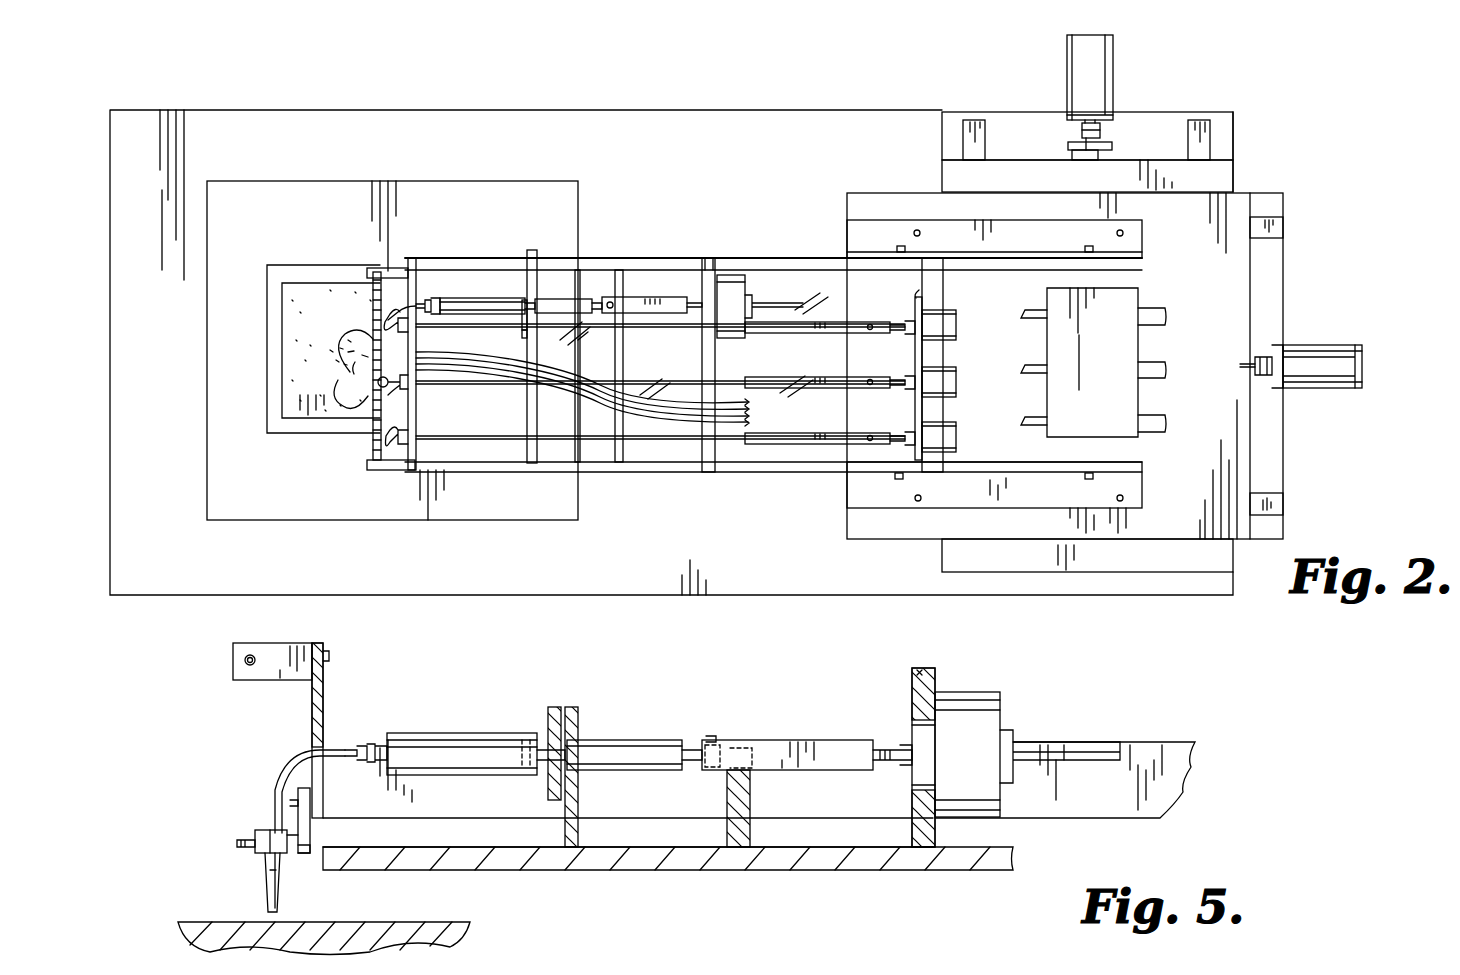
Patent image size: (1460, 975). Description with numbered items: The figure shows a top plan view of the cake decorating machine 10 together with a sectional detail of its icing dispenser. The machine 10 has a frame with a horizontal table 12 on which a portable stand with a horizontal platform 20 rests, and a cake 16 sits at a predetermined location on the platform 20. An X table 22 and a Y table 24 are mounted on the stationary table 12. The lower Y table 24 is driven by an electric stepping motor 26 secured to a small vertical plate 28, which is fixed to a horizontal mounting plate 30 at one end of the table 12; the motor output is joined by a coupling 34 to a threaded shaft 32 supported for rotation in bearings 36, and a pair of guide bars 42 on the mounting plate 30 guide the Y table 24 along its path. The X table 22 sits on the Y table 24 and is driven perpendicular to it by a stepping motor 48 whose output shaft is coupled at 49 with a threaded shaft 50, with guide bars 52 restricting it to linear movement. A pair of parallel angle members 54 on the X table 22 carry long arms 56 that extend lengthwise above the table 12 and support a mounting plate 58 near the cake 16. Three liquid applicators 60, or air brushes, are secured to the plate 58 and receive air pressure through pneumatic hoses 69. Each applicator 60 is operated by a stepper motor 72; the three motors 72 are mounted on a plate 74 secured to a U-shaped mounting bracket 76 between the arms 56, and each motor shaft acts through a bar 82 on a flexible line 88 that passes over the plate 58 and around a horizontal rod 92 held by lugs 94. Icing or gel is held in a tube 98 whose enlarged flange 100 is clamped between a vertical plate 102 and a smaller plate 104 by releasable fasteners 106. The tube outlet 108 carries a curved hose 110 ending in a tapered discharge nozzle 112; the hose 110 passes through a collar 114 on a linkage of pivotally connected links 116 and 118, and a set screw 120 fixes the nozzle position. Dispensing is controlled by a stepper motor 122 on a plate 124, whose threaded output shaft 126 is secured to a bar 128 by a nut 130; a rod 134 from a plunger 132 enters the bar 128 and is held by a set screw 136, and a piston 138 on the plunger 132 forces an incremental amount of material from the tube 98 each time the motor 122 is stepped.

In FIG. 2, the cake decorating machine 10 is at (1330, 104).
In FIG. 2, the horizontal table 12 is at (822, 595).
In FIG. 2, the cake 16 is at (300, 408).
In FIG. 5, the cake 16 is at (453, 922).
In FIG. 2, the horizontal platform 20 is at (332, 508).
In FIG. 2, the X table 22 is at (1252, 292).
In FIG. 2, the Y table 24 is at (1236, 180).
In FIG. 2, the electric stepping motor 26 is at (1113, 50).
In FIG. 2, the vertical plate 28 is at (1112, 115).
In FIG. 2, the horizontal mounting plate 30 is at (1034, 128).
In FIG. 2, the threaded shaft 32 is at (1104, 147).
In FIG. 2, the coupling 34 is at (1100, 130).
In FIG. 2, the bearings 36 is at (1075, 160).
In FIG. 2, the guide bars 42 is at (1248, 133).
In FIG. 2, the electric stepping motor 48 is at (1325, 390).
In FIG. 2, the coupling 49 is at (1265, 357).
In FIG. 2, the threaded shaft 50 is at (1250, 365).
In FIG. 2, the guide bars 52 is at (1283, 228).
In FIG. 2, the angle members 54 is at (858, 232).
In FIG. 2, the arms 56 is at (708, 262).
In FIG. 5, the arms 56 is at (1072, 810).
In FIG. 2, the mounting plate 58 is at (416, 262).
In FIG. 5, the mounting plate 58 is at (325, 705).
In FIG. 2, the liquid applicators 60 is at (409, 333).
In FIG. 2, the pneumatic hoses 69 is at (665, 395).
In FIG. 2, the electric stepper motor 72 is at (956, 362).
In FIG. 2, the plate 74 is at (918, 297).
In FIG. 2, the U-shaped mounting bracket 76 is at (943, 282).
In FIG. 2, the bar 82 is at (855, 333).
In FIG. 2, the flexible lines 88 is at (655, 327).
In FIG. 2, the horizontal rod 92 is at (373, 452).
In FIG. 5, the horizontal rod 92 is at (244, 660).
In FIG. 2, the lugs 94 is at (383, 268).
In FIG. 5, the lugs 94 is at (275, 643).
In FIG. 2, the tube 98 is at (478, 298).
In FIG. 5, the tube 98 is at (472, 733).
In FIG. 2, the enlarged flange 100 is at (535, 314).
In FIG. 5, the enlarged flange 100 is at (565, 770).
In FIG. 2, the vertical plate 102 is at (577, 268).
In FIG. 5, the vertical plate 102 is at (578, 810).
In FIG. 2, the smaller plate 104 is at (531, 262).
In FIG. 5, the smaller plate 104 is at (548, 790).
In FIG. 2, the releasable fasteners 106 is at (530, 262).
In FIG. 2, the outlet 108 is at (436, 300).
In FIG. 5, the outlet 108 is at (375, 745).
In FIG. 2, the hose 110 is at (398, 312).
In FIG. 5, the hose 110 is at (290, 775).
In FIG. 5, the tapered discharge nozzle 112 is at (281, 900).
In FIG. 5, the collar 114 is at (262, 830).
In FIG. 5, the link 116 is at (312, 838).
In FIG. 5, the link 118 is at (299, 855).
In FIG. 5, the set screw 120 is at (238, 845).
In FIG. 2, the stepper motor 122 is at (748, 282).
In FIG. 5, the stepper motor 122 is at (985, 710).
In FIG. 2, the plate 124 is at (722, 268).
In FIG. 5, the plate 124 is at (936, 672).
In FIG. 5, the output shaft 126 is at (902, 745).
In FIG. 2, the bar 128 is at (643, 298).
In FIG. 5, the bar 128 is at (828, 742).
In FIG. 5, the nut 130 is at (885, 750).
In FIG. 2, the plunger 132 is at (583, 299).
In FIG. 5, the plunger 132 is at (625, 743).
In FIG. 5, the rod 134 is at (690, 750).
In FIG. 5, the set screw 136 is at (718, 736).
In FIG. 5, the piston 138 is at (532, 740).